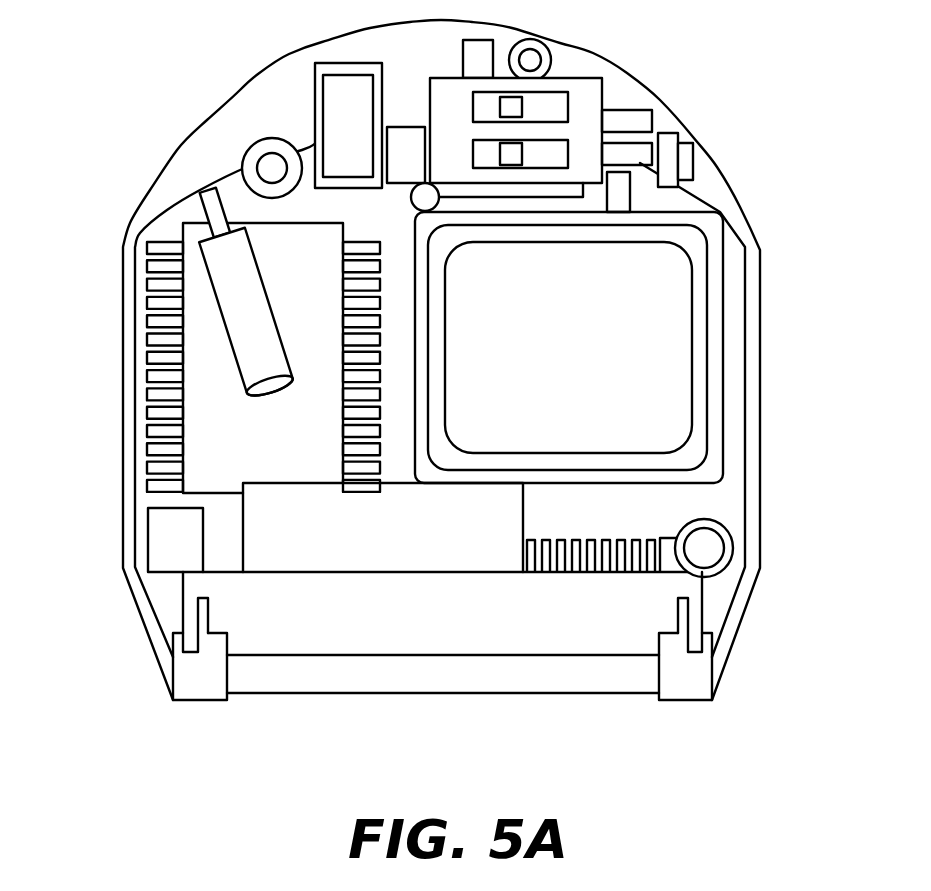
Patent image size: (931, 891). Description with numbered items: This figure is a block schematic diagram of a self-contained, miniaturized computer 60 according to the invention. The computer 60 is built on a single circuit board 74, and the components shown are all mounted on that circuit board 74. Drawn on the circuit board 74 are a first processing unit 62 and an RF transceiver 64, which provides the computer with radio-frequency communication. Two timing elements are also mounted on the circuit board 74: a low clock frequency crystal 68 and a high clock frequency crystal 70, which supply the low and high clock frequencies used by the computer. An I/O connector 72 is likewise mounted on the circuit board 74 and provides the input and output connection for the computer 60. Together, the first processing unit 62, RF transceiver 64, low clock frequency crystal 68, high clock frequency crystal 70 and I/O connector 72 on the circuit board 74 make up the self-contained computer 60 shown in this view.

The computer 60 is at (196, 54).
The first processing unit 62 is at (233, 428).
The RF transceiver 64 is at (590, 363).
The low clock frequency crystal 68 is at (228, 254).
The high clock frequency crystal 70 is at (330, 522).
The I/O connector 72 is at (344, 614).
The circuit board 74 is at (727, 173).